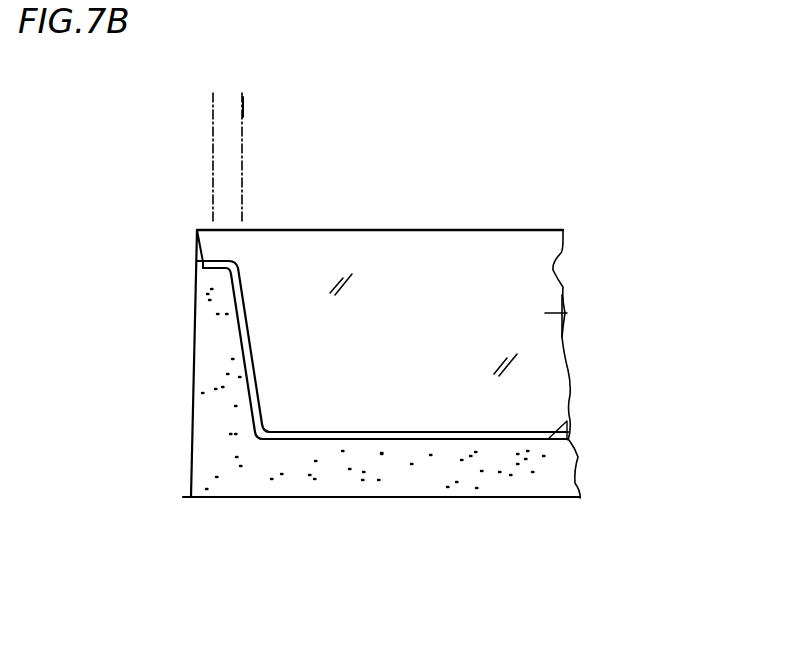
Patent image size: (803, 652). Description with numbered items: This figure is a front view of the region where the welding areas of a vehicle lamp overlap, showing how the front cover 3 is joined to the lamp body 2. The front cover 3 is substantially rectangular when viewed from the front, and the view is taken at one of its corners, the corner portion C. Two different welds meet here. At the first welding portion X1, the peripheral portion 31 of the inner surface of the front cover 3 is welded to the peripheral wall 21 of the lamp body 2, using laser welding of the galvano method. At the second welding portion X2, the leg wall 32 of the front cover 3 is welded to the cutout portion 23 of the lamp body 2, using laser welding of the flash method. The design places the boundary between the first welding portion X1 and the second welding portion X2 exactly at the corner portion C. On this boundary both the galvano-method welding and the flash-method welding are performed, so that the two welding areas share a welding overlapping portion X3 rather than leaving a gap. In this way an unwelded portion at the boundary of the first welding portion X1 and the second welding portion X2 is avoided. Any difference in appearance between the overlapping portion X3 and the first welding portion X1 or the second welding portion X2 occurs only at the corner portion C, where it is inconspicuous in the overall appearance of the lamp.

The lamp body 2 is at (362, 499).
The peripheral wall 21 is at (200, 384).
The cutout portion 23 is at (470, 433).
The front cover 3 is at (563, 252).
The peripheral portion 31 is at (197, 230).
The leg wall 32 is at (567, 311).
The first welding portion X1 is at (243, 163).
The second welding portion X2 is at (213, 206).
The overlapping portion X3 is at (243, 118).
The corner portion C is at (183, 497).